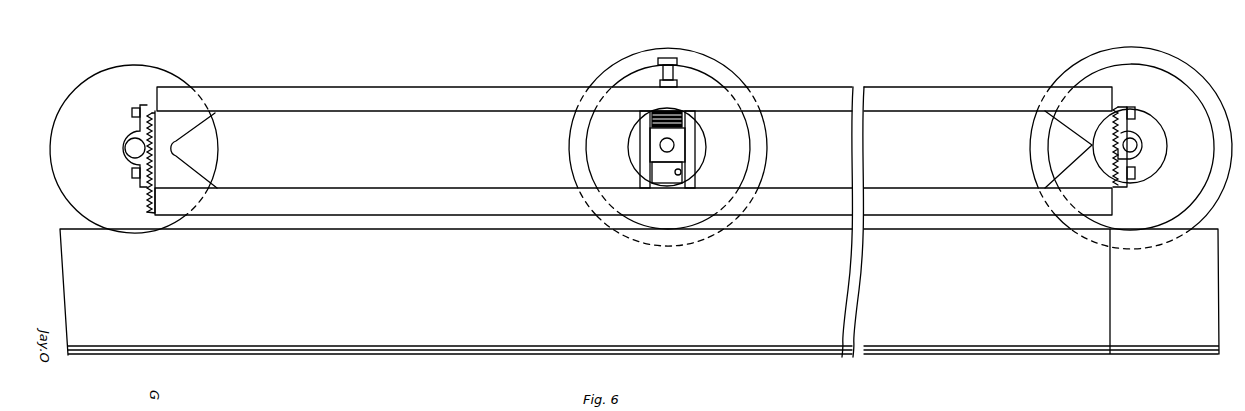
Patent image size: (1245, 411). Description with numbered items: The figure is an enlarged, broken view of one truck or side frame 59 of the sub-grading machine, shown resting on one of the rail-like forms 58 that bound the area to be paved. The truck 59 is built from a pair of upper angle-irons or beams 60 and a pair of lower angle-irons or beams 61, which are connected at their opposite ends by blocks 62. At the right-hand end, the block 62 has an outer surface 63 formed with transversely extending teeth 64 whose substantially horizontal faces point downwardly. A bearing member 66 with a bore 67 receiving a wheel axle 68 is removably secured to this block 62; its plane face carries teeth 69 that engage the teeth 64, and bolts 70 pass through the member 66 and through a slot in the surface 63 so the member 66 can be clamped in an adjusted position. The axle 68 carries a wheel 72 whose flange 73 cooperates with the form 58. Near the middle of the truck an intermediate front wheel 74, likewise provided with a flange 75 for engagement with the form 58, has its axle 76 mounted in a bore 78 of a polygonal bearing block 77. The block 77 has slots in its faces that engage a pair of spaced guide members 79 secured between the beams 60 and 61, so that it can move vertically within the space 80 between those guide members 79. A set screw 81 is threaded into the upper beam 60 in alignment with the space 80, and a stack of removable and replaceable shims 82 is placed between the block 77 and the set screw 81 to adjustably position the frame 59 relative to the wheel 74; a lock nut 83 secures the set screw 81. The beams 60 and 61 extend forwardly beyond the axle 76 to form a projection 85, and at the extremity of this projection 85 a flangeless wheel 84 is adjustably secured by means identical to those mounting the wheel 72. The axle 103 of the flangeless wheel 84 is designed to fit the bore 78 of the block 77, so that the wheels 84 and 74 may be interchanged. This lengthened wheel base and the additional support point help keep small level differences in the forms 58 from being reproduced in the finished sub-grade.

The forms 58 is at (962, 328).
The truck 59 is at (809, 67).
The upper angle-irons 60 is at (960, 92).
The lower angle-irons 61 is at (940, 190).
The block 62 is at (170, 122).
The outer surface 63 is at (1125, 105).
The teeth 64 is at (1117, 193).
The bearing member 66 is at (1132, 135).
The bore 67 is at (1137, 145).
The wheel axle 68 is at (1137, 153).
The teeth 69 is at (1138, 134).
The bolts 70 is at (1135, 172).
The wheels 72 is at (1178, 207).
The flanges 73 is at (1220, 172).
The intermediate wheels 74 is at (693, 78).
The flanges 75 is at (690, 62).
The axle 76 is at (671, 145).
The polygonal bearing block 77 is at (658, 135).
The bore 78 is at (662, 148).
The guide members 79 is at (688, 182).
The space 80 is at (688, 175).
The set screw 81 is at (672, 58).
The shims 82 is at (678, 118).
The lock nut 83 is at (665, 80).
The flangeless wheel 84 is at (127, 72).
The projection 85 is at (281, 77).
The axles 103 is at (128, 142).